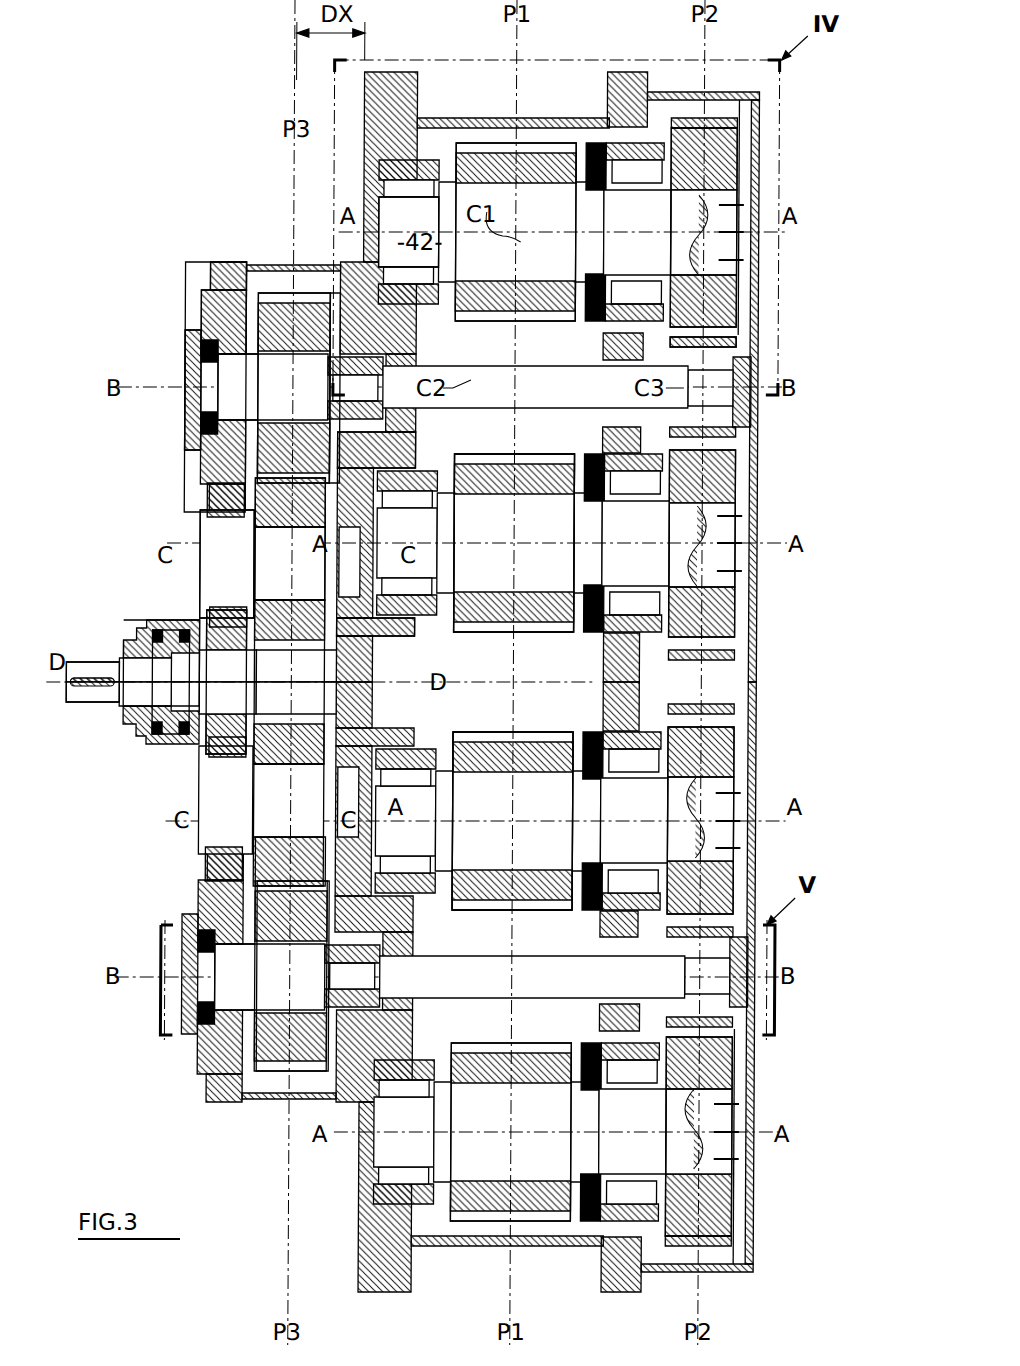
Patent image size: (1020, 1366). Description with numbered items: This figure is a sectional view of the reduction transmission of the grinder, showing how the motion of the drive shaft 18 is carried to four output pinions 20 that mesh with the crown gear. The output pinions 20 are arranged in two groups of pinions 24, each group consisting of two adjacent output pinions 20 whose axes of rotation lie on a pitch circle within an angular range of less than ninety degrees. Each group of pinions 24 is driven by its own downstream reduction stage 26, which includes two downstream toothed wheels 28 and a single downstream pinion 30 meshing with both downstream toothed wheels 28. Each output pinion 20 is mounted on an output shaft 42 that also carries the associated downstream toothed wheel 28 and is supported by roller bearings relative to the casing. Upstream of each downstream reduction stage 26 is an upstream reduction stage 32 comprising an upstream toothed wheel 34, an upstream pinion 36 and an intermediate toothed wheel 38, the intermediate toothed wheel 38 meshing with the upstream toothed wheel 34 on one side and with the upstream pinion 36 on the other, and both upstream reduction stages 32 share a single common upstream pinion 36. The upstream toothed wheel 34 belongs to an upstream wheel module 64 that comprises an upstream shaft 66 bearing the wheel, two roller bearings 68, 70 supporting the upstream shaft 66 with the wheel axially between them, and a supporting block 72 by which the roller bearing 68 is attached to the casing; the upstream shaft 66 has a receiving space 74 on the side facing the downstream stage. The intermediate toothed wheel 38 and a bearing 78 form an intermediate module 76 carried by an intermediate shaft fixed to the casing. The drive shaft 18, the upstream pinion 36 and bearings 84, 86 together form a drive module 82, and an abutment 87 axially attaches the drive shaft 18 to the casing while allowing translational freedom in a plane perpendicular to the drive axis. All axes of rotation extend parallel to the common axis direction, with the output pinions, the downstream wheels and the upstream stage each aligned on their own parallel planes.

The drive shaft 18 is at (93, 664).
The output pinion 20 is at (508, 322).
The group of pinions 24 is at (498, 640).
The downstream reduction stage 26 is at (826, 90).
The downstream toothed wheel 28 is at (734, 166).
The downstream pinion 30 is at (736, 344).
The upstream reduction stage 32 is at (52, 262).
The upstream toothed wheel 34 is at (286, 330).
The upstream pinion 36 is at (228, 742).
The intermediate toothed wheel 38 is at (256, 500).
The output shaft 42 is at (409, 232).
The upstream wheel module 64 is at (206, 248).
The upstream shaft 66 is at (256, 300).
The roller bearing 68 is at (198, 342).
The roller bearing 70 is at (330, 330).
The supporting block 72 is at (202, 330).
The receiving space 74 is at (418, 458).
The intermediate module 76 is at (190, 540).
The bearing 78 is at (282, 540).
The drive module 82 is at (109, 728).
The bearing 84 is at (200, 722).
The bearing 86 is at (392, 640).
The abutment 87 is at (144, 724).